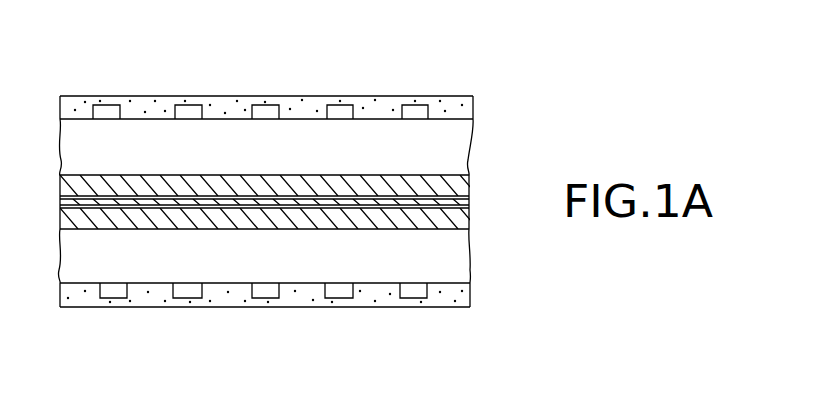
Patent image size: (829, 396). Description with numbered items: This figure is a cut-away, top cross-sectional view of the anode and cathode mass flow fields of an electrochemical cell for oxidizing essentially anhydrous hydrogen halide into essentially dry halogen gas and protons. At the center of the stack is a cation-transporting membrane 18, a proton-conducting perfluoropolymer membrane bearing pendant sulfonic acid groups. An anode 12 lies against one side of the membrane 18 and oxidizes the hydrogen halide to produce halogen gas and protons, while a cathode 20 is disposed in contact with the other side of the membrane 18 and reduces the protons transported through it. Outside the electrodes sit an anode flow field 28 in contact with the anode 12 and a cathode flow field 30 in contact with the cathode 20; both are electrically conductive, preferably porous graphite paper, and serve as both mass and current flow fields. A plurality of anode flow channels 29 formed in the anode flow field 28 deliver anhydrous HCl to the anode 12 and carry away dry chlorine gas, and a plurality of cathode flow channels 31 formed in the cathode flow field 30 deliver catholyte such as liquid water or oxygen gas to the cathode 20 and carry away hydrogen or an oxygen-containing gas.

The anode 12 is at (92, 182).
The cation-transporting membrane 18 is at (470, 202).
The cathode 20 is at (92, 227).
The anode flow field 28 is at (195, 96).
The anode flow channels 29 is at (112, 105).
The cathode flow field 30 is at (193, 307).
The cathode flow channels 31 is at (111, 298).